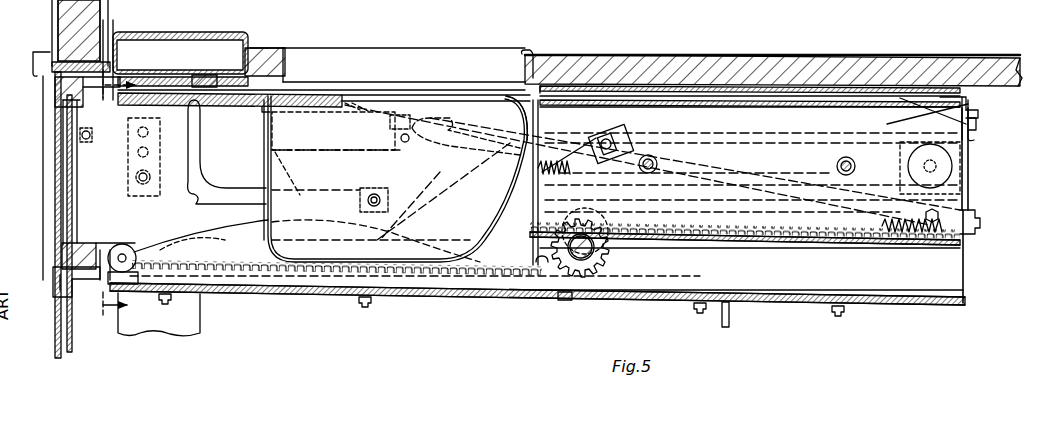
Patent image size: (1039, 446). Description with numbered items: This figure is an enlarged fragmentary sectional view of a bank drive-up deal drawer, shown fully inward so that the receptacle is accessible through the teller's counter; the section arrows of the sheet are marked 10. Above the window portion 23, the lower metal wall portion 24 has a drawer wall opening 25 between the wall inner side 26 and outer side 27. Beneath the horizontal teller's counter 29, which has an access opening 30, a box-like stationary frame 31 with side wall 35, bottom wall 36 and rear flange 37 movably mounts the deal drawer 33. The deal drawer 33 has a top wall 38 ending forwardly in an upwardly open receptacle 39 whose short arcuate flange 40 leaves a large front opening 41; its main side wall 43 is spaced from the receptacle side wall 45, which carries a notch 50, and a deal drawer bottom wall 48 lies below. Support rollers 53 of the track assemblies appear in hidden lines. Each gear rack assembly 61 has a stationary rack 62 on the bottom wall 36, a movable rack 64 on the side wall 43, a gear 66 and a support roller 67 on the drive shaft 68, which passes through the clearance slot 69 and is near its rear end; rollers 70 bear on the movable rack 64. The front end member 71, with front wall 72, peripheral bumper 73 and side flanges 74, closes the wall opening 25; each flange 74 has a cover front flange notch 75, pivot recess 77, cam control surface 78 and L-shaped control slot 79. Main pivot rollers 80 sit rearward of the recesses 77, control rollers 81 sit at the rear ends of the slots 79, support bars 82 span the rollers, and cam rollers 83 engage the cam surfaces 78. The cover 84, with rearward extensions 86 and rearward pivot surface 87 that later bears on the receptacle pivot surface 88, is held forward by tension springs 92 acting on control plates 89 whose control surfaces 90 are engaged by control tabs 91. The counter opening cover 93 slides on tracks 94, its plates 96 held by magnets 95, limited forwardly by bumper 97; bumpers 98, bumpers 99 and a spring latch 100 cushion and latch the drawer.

The section line 10 is at (107, 193).
The window portion 23 is at (68, 14).
The lower metal wall portion 24 is at (56, 338).
The drawer wall opening 25 is at (53, 270).
The wall inner side 26 is at (72, 330).
The wall outer side 27 is at (54, 320).
The teller's counter 29 is at (642, 65).
The access opening 30 is at (525, 54).
The stationary frame 31 is at (410, 296).
The deal drawer 33 is at (955, 206).
The side wall 35 is at (751, 278).
The bottom wall 36 is at (308, 293).
The rear flange 37 is at (974, 124).
The top wall 38 is at (710, 108).
The receptacle 39 is at (482, 222).
The arcuate upwardly extending flange 40 is at (274, 224).
The front opening 41 is at (266, 165).
The side wall 43 is at (752, 172).
The receptacle side wall 45 is at (616, 172).
The deal drawer bottom wall 48 is at (757, 240).
The notch 50 is at (263, 111).
The support rollers 53 is at (962, 178).
The gear rack assemblies 61 is at (612, 262).
The stationary rack 62 is at (473, 284).
The movable rack 64 is at (975, 220).
The rotatable gear 66 is at (600, 249).
The rotatable support roller 67 is at (604, 272).
The rotatable drive shaft 68 is at (586, 262).
The drive shaft clearance slot 69 is at (542, 260).
The rollers 70 is at (150, 180).
The front end member 71 is at (54, 115).
The front wall 72 is at (67, 150).
The peripheral resilient bumper 73 is at (62, 254).
The side flanges 74 is at (88, 168).
The cover front flange notch 75 is at (90, 140).
The pivot recess 77 is at (452, 130).
The cam control surface 78 is at (228, 226).
The control slot 79 is at (196, 190).
The main pivot rollers 80 is at (635, 165).
The control rollers 81 is at (362, 196).
The support bars 82 is at (553, 152).
The cam rollers 83 is at (128, 291).
The cover 84 is at (292, 97).
The rearward extensions 86 is at (118, 108).
The rearward pivot surface 87 is at (346, 100).
The receptacle pivot surface 88 is at (512, 100).
The control plates 89 is at (303, 150).
The control surface 90 is at (340, 128).
The control tabs 91 is at (368, 100).
The tension springs 92 is at (913, 234).
The counter opening cover 93 is at (717, 90).
The tracks 94 is at (432, 90).
The magnets 95 is at (928, 114).
The downwardly extending plates 96 is at (967, 100).
The resilient bumper 97 is at (205, 76).
The resilient bumpers 98 is at (150, 248).
The bumpers 99 is at (978, 112).
The spring latch 100 is at (892, 120).